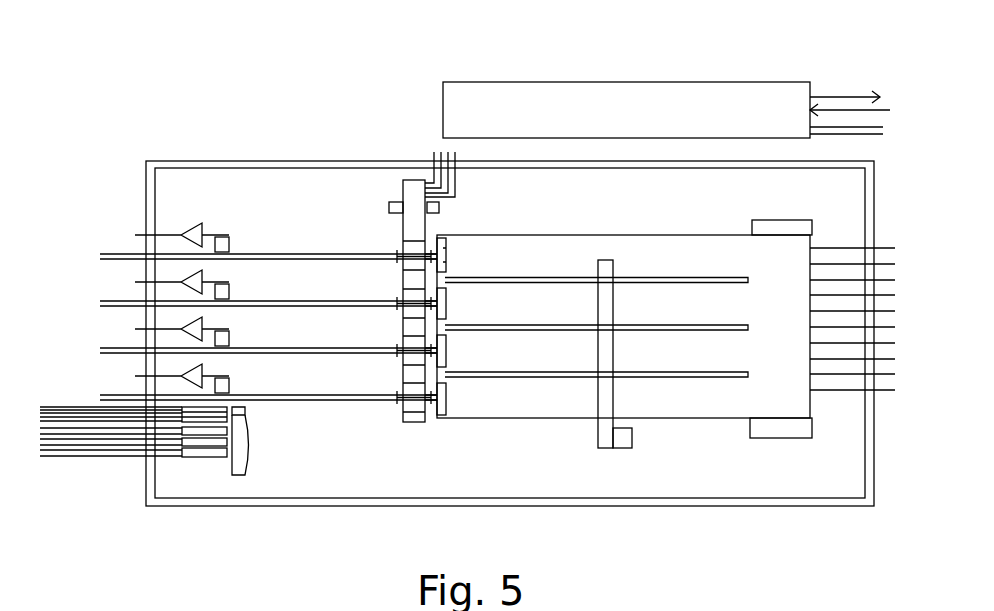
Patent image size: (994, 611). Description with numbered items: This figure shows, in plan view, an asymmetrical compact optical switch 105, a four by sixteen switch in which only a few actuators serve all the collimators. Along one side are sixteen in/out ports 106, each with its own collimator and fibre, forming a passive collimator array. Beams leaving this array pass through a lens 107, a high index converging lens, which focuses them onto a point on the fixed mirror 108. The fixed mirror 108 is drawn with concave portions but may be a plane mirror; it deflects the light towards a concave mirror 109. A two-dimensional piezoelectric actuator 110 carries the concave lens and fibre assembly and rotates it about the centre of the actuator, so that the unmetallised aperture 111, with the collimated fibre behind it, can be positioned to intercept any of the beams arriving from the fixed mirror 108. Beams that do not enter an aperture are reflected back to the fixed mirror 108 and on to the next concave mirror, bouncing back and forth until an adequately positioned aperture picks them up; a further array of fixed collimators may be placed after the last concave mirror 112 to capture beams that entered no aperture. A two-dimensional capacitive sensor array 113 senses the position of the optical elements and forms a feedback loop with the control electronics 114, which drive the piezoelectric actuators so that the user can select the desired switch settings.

The switch 105 is at (240, 148).
The in/out ports 106 is at (189, 470).
The lens 107 is at (238, 467).
The fixed mirror 108 is at (605, 450).
The concave mirror 109 is at (447, 418).
The 2D piezoelectric actuator 110 is at (525, 410).
The unmetallised aperture 111 is at (430, 407).
The last concave mirror 112 is at (442, 240).
The 2 dimensional capacitive sensor array 113 is at (403, 186).
The control electronics 114 is at (505, 108).